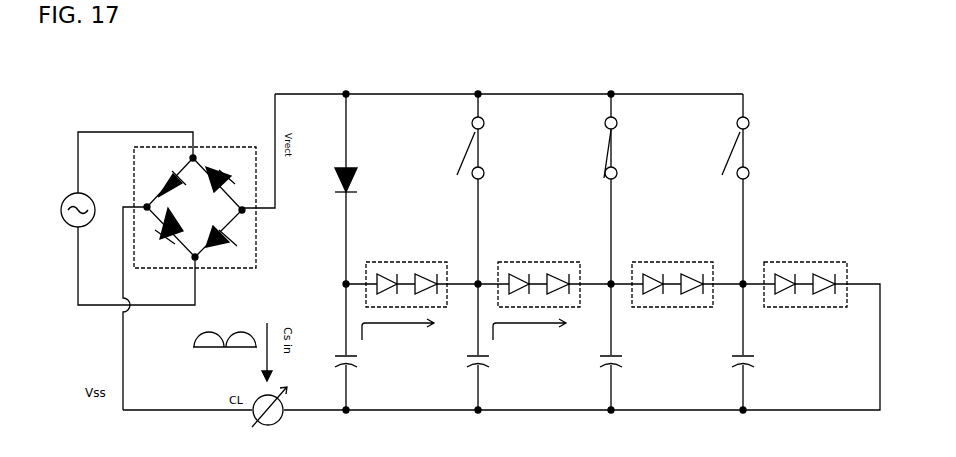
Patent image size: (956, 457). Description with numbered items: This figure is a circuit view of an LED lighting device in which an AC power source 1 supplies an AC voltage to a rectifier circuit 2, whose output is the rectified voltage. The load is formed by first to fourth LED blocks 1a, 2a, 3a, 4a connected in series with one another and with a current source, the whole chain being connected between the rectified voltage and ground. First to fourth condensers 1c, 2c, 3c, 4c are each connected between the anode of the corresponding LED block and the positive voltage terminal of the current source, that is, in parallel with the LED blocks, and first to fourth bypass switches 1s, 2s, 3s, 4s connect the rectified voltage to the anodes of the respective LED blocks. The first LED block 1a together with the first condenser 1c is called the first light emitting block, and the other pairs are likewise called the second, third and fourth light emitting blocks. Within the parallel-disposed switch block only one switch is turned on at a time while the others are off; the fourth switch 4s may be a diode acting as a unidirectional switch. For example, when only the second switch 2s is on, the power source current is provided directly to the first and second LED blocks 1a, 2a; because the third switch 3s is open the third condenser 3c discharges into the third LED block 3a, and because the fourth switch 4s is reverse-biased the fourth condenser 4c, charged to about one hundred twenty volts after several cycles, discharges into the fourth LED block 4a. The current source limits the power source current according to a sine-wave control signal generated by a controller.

The AC power source 1 is at (88, 191).
The rectifier circuit 2 is at (220, 128).
The first bypass switch 1s is at (758, 224).
The second bypass switch 2s is at (636, 224).
The third bypass switch 3s is at (500, 224).
The fourth bypass switch 4s is at (358, 224).
The first LED block 1a is at (805, 277).
The second LED block 2a is at (672, 277).
The third LED block 3a is at (539, 277).
The fourth LED block 4a is at (406, 277).
The first condenser 1c is at (757, 383).
The second condenser 2c is at (625, 383).
The third condenser 3c is at (492, 383).
The fourth condenser 4c is at (364, 383).